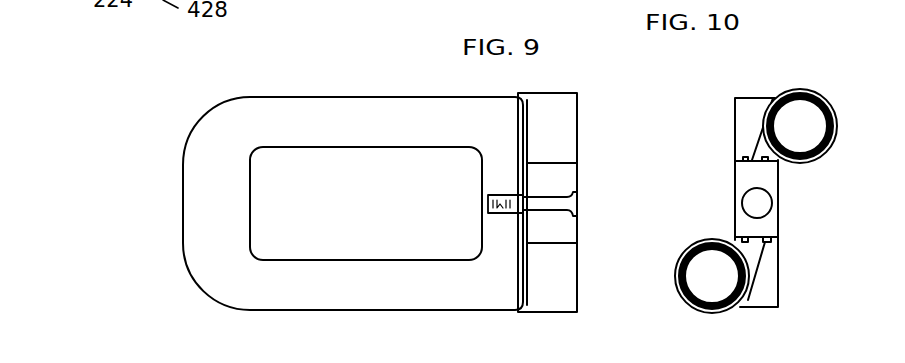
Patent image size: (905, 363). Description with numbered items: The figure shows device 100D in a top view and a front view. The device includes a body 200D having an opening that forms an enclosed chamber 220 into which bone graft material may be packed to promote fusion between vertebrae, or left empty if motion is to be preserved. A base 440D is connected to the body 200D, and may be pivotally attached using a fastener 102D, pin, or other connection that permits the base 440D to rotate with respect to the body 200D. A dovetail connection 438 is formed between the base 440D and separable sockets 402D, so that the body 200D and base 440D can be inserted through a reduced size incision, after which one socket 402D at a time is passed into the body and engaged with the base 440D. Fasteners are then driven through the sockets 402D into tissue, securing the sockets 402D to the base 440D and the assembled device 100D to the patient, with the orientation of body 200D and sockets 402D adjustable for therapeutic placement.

In FIG. 9, the device 100D is at (175, 141).
In FIG. 9, the body 200D is at (175, 256).
In FIG. 10, the body 200D is at (731, 106).
In FIG. 9, the chamber 220 is at (325, 195).
In FIG. 9, the fastener 102D is at (504, 213).
In FIG. 9, the base 440D is at (585, 228).
In FIG. 10, the base 440D is at (725, 220).
In FIG. 10, the dovetail connection 438 is at (748, 170).
In FIG. 10, the socket 402D is at (826, 86).